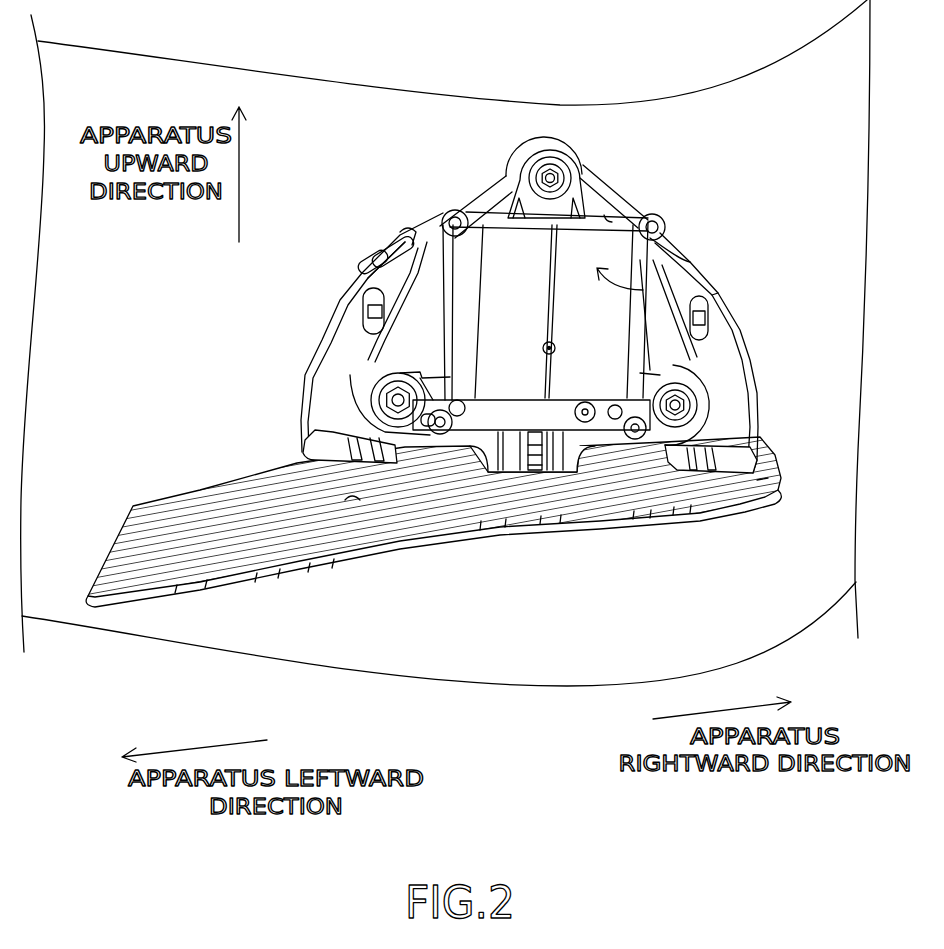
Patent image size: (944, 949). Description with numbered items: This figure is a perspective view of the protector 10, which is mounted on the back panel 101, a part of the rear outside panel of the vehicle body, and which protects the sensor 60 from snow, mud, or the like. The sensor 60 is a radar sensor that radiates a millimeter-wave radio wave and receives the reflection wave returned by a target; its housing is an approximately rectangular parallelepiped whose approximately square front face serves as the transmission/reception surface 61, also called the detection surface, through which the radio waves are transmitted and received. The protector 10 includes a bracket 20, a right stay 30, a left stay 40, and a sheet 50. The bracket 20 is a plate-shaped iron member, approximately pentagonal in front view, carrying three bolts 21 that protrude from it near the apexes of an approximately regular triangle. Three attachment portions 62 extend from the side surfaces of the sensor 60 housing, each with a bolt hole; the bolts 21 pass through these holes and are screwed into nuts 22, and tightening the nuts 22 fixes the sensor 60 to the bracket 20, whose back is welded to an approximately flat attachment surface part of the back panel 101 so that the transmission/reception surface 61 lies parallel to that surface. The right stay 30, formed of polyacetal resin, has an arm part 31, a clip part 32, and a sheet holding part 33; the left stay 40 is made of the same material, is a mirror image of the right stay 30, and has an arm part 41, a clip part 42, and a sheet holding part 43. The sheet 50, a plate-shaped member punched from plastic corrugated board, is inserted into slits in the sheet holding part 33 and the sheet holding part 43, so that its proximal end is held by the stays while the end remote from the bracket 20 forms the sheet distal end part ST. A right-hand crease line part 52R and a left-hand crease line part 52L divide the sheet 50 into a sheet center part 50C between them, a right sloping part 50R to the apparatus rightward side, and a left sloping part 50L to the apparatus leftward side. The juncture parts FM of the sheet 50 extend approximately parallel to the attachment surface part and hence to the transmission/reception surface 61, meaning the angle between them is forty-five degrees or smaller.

The back panel 101 is at (345, 110).
The protector 10 is at (459, 540).
The bracket 20 is at (473, 181).
The bolt 21 is at (565, 172).
The nut 22 is at (530, 172).
The right stay 30 is at (731, 353).
The arm part 31 is at (752, 334).
The clip part 32 is at (703, 303).
The sheet holding part 33 is at (720, 460).
The left stay 40 is at (346, 338).
The arm part 41 is at (326, 334).
The clip part 42 is at (370, 300).
The sheet holding part 43 is at (320, 448).
The sheet 50 is at (459, 527).
The left sloping part 50L is at (238, 537).
The sheet center part 50C is at (580, 500).
The right sloping part 50R is at (778, 465).
The left-hand crease line part 52L is at (352, 505).
The right-hand crease line part 52R is at (757, 493).
The sensor 60 is at (607, 218).
The transmission/reception surface 61 is at (657, 253).
The attachment portion 62 is at (588, 175).
The juncture part FM is at (485, 500).
The sheet distal end part ST is at (540, 535).